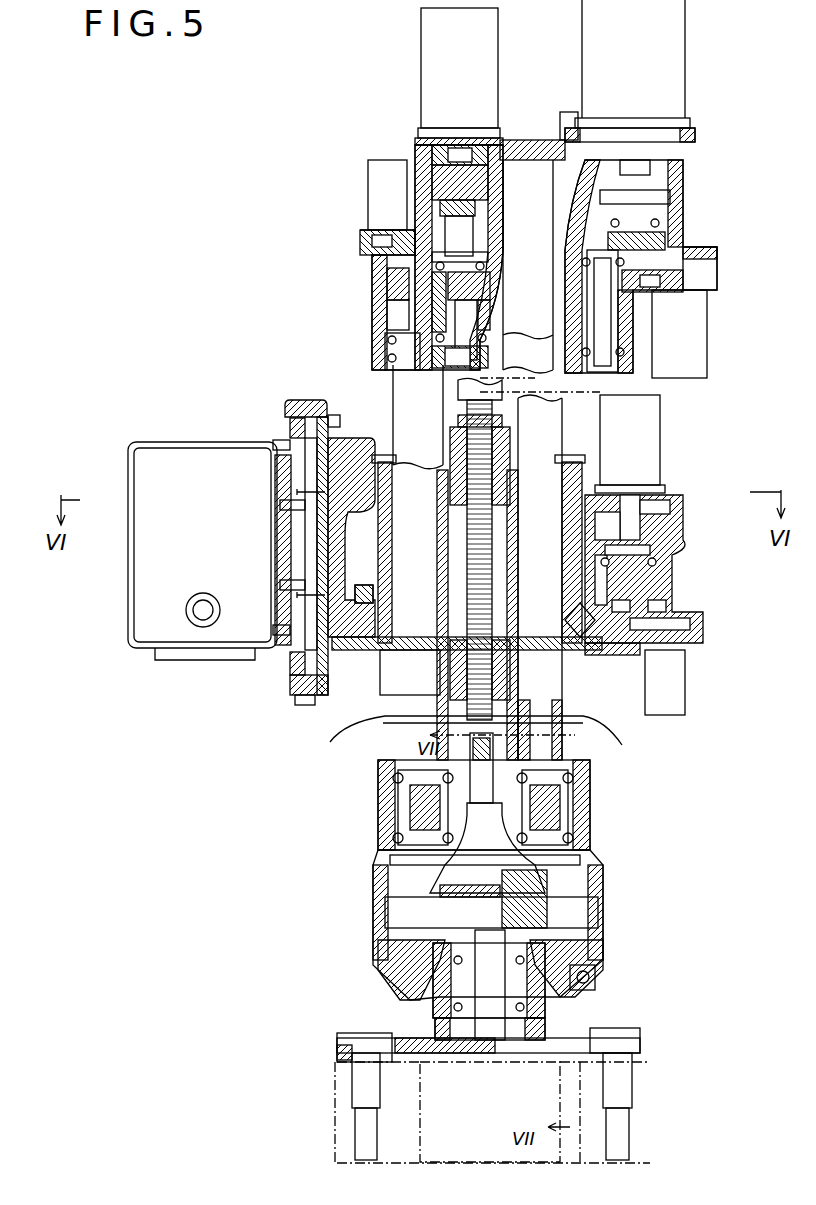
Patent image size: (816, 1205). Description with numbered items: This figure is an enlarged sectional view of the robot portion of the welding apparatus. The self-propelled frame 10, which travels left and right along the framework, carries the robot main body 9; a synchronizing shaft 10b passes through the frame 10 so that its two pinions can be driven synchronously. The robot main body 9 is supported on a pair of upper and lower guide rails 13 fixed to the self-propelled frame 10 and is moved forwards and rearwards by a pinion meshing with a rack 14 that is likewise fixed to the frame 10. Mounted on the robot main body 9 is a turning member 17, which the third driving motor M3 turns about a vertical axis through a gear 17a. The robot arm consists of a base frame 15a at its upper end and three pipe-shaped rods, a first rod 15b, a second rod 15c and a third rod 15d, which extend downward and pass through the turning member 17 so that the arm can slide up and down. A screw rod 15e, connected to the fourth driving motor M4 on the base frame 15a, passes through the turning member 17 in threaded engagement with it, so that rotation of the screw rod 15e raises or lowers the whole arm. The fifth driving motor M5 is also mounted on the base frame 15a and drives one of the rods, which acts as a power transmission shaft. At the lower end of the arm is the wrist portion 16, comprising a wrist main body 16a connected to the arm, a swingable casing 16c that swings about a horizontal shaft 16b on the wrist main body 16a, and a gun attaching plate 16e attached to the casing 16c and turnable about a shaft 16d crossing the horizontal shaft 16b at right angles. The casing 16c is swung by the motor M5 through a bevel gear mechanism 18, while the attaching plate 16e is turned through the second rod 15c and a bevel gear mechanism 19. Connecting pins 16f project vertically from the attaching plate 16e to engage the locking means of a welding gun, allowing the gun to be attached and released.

The fifth driving motor M5 is at (436, 68).
The fourth driving motor M4 is at (655, 90).
The third driving motor M3 is at (642, 456).
The base frame 15a is at (380, 268).
The self-propelled frame 10 is at (188, 441).
The synchronizing shaft 10b is at (198, 594).
The guide rails 13 is at (288, 440).
The rack 14 is at (285, 542).
The first rod 15b is at (383, 702).
The robot main body 9 is at (351, 652).
The turning member 17 is at (583, 655).
The gear 17a is at (607, 660).
The screw rod 15e is at (385, 720).
The second rod 15c is at (575, 718).
The third rod 15d is at (580, 740).
The bevel gear mechanism 18 is at (385, 847).
The wrist main body 16a is at (590, 822).
The wrist portion 16 is at (501, 886).
The horizontal shaft 16b is at (565, 913).
The bevel gear mechanism 19 is at (582, 976).
The swingable casing 16c is at (560, 985).
The shaft 16d is at (428, 1002).
The gun attaching plate 16e is at (535, 1045).
The connecting pins 16f is at (352, 1090).